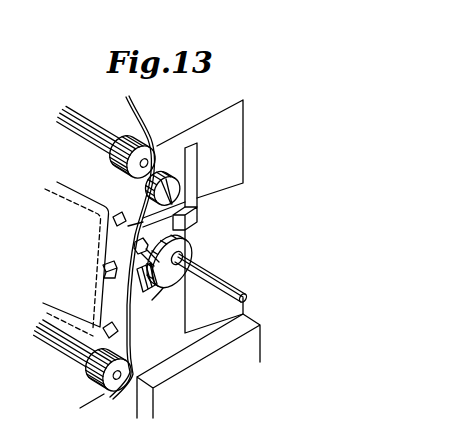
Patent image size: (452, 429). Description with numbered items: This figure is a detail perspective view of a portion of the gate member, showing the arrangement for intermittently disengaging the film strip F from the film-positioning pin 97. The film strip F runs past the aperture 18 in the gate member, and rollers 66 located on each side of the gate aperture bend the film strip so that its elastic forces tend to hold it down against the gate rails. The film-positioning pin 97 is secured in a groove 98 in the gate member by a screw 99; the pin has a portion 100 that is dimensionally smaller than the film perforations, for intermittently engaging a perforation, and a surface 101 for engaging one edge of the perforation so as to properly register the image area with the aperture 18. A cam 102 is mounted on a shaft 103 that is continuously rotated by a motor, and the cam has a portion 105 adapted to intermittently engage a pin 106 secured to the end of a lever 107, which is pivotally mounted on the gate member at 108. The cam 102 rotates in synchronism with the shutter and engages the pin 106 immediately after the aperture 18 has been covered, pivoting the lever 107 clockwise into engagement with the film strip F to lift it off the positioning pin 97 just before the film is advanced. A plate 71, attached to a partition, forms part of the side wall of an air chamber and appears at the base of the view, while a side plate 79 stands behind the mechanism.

The film strip F is at (142, 126).
The rollers 66 is at (114, 162).
The aperture 18 is at (70, 195).
The lever 107 is at (128, 226).
The portion 105 is at (136, 243).
The surface 101 is at (102, 266).
The portion 100 is at (112, 280).
The side plate 79 is at (245, 147).
The pivot 108 is at (168, 190).
The pin 106 is at (187, 224).
The cam 102 is at (184, 242).
The screw 99 is at (165, 274).
The shaft 103 is at (234, 291).
The film-positioning pin 97 is at (152, 300).
The groove 98 is at (133, 293).
The plates 71 is at (249, 349).